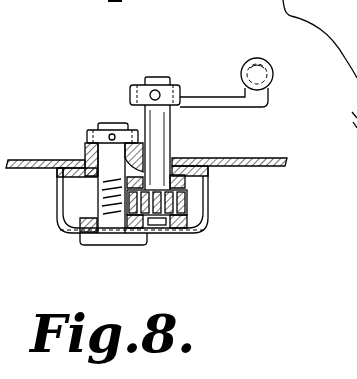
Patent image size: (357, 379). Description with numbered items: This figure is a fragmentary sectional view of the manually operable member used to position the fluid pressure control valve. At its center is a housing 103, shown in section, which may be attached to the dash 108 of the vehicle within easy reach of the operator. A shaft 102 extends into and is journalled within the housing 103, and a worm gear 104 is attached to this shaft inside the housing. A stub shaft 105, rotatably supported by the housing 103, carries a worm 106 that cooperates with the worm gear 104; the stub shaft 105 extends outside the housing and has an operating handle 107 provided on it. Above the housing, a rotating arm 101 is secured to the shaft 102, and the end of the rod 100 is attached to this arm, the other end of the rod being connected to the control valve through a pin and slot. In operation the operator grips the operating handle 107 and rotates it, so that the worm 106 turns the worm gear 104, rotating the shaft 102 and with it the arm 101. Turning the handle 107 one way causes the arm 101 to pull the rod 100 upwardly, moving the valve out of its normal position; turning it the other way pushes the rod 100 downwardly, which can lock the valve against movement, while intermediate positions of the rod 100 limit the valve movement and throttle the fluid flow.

The rod 100 is at (266, 57).
The rotating arm 101 is at (233, 102).
The shaft 102 is at (157, 138).
The housing 103 is at (210, 188).
The worm gear 104 is at (184, 213).
The stub shaft 105 is at (107, 152).
The worm 106 is at (107, 196).
The operating handle 107 is at (118, 237).
The dash 108 is at (263, 156).